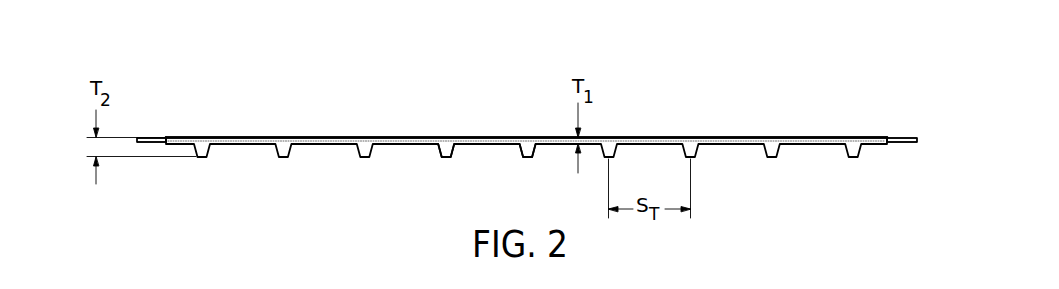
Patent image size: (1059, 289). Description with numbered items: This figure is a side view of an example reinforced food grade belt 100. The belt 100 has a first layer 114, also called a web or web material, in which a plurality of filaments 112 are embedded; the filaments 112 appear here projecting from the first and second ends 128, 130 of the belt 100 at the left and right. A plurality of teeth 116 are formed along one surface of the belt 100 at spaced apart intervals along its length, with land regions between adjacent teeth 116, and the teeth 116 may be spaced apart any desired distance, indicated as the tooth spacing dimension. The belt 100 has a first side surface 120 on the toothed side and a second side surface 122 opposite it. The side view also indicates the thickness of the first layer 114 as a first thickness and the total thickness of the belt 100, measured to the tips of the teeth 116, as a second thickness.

The reinforced food grade belt 100 is at (524, 109).
The filaments 112 is at (152, 138).
The first layer 114 is at (418, 142).
The teeth 116 is at (442, 151).
The first side surface 120 is at (352, 145).
The second side surface 122 is at (343, 137).
The first end 128 is at (165, 142).
The second end 130 is at (890, 144).